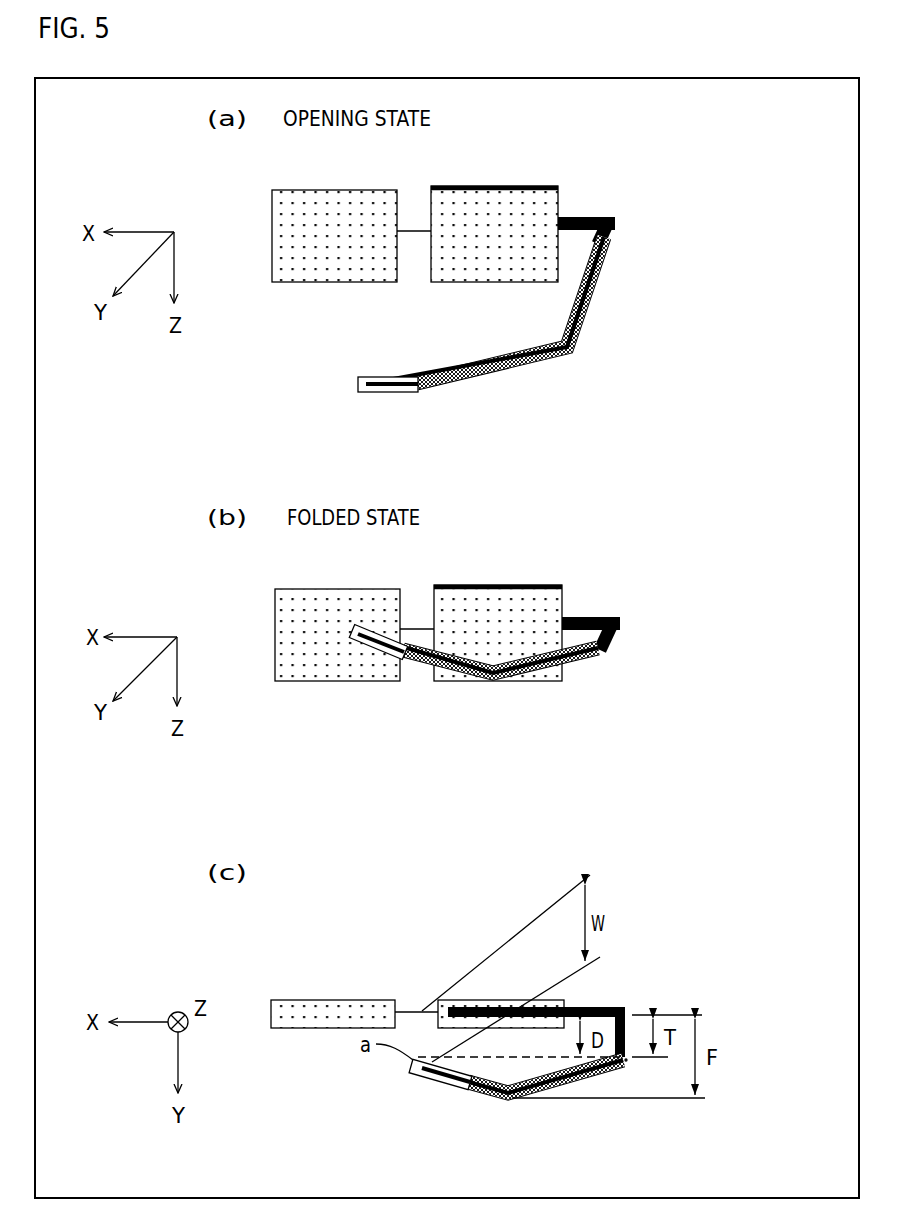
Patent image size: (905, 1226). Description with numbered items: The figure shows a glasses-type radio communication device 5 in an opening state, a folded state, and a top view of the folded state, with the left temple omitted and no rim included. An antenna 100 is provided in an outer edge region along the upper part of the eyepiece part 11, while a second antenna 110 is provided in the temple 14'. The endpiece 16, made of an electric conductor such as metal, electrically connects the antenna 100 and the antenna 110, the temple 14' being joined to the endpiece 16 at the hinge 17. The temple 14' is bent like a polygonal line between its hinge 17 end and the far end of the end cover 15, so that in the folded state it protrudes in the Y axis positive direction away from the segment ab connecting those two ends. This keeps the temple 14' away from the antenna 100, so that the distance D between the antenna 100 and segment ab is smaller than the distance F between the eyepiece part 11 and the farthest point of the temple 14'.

The glasses-type radio communication device 5 is at (622, 164).
The eyepiece part 11 is at (334, 190).
The antenna 100 is at (493, 186).
The endpiece 16 is at (601, 215).
The antenna 110 is at (502, 696).
The temple 14' is at (513, 696).
The end cover 15 is at (385, 393).
The hinge 17 is at (640, 1086).